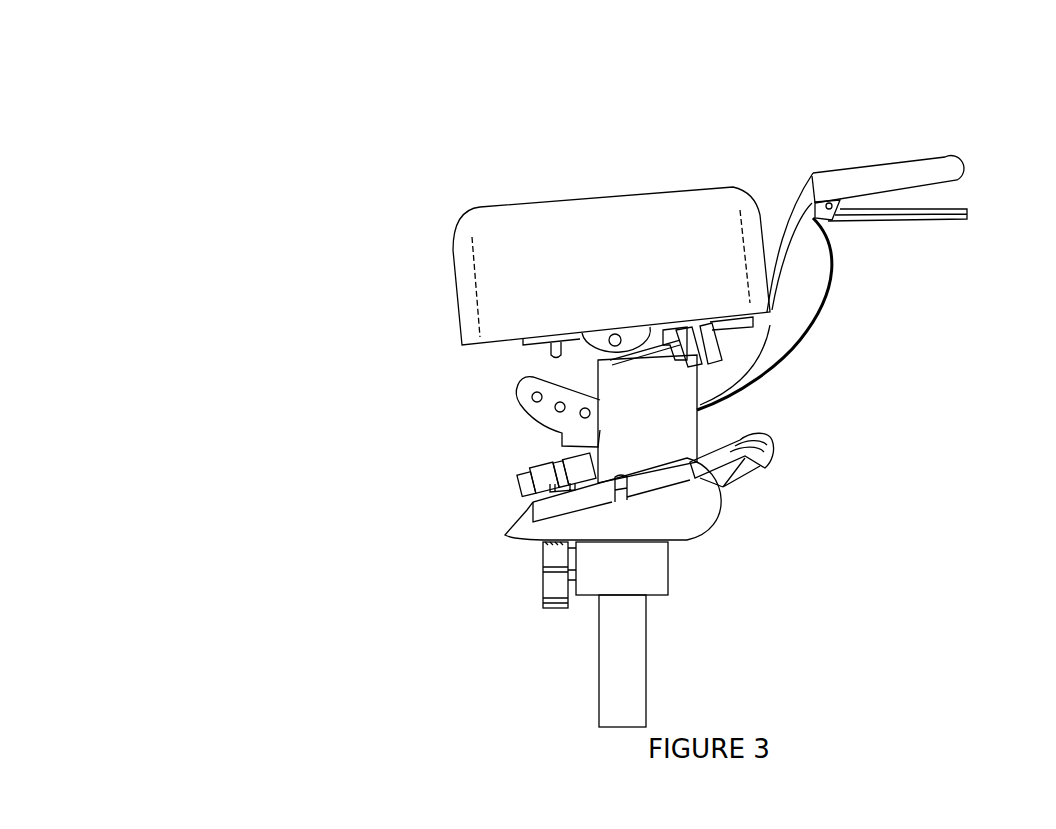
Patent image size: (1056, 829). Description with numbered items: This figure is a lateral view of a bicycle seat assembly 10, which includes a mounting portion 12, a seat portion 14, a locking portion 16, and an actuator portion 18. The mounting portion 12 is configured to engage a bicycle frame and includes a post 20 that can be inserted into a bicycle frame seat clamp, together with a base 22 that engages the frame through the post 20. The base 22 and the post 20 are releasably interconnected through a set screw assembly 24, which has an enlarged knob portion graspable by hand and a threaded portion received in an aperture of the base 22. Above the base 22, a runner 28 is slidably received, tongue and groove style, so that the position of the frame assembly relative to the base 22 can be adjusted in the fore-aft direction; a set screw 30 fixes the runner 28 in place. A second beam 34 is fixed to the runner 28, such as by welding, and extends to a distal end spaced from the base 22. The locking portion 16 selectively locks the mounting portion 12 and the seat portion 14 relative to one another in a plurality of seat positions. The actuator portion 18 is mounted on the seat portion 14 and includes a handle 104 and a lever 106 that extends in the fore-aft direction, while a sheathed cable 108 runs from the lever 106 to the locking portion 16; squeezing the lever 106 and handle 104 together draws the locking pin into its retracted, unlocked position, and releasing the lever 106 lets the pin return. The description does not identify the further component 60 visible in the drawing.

The bicycle seat assembly 10 is at (524, 158).
The mounting portion 12 is at (484, 690).
The seat portion 14 is at (625, 165).
The locking portion 16 is at (357, 464).
The actuator portion 18 is at (896, 126).
The post 20 is at (618, 687).
The base 22 is at (643, 558).
The set screw assembly 24 is at (557, 555).
The runner 28 is at (667, 477).
The set screw 30 is at (545, 485).
The second beam 34 is at (655, 405).
The lens 60 is at (450, 170).
The handle 104 is at (875, 185).
The lever 106 is at (925, 222).
The sheathed cable 108 is at (823, 310).